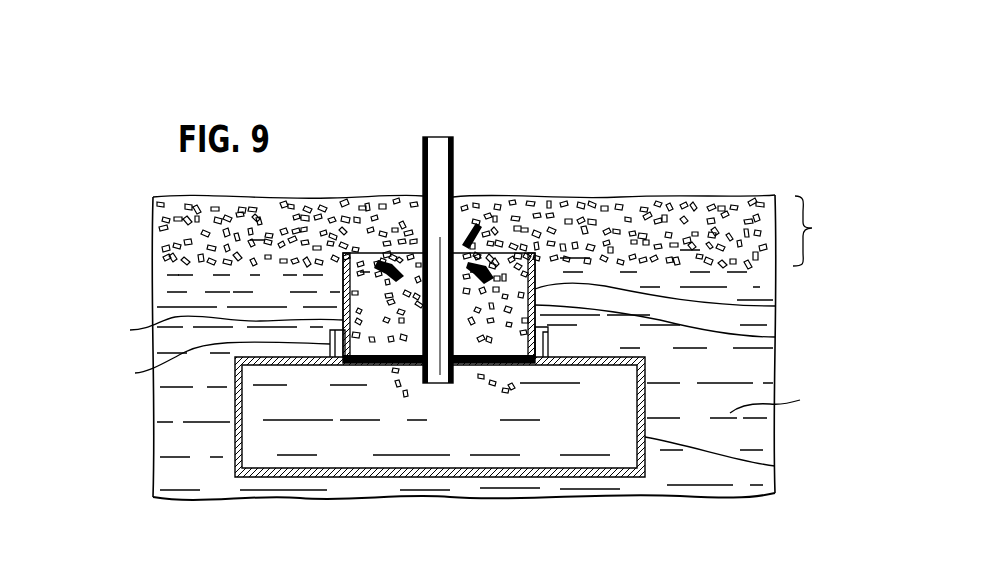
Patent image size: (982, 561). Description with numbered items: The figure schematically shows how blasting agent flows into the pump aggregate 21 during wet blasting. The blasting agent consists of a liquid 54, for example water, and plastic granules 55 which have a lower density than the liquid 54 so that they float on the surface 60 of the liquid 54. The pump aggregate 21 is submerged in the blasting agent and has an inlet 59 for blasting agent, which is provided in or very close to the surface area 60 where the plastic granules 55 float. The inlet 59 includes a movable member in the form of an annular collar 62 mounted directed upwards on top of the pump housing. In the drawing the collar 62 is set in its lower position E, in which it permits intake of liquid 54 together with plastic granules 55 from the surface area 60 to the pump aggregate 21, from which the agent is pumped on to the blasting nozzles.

The pump aggregate 21 is at (775, 466).
The liquid 54 is at (468, 347).
The plastic granules 55 is at (160, 228).
The inlet 59 is at (478, 226).
The surface 60 is at (504, 230).
The annular collar 62 is at (775, 337).
The position E is at (775, 306).